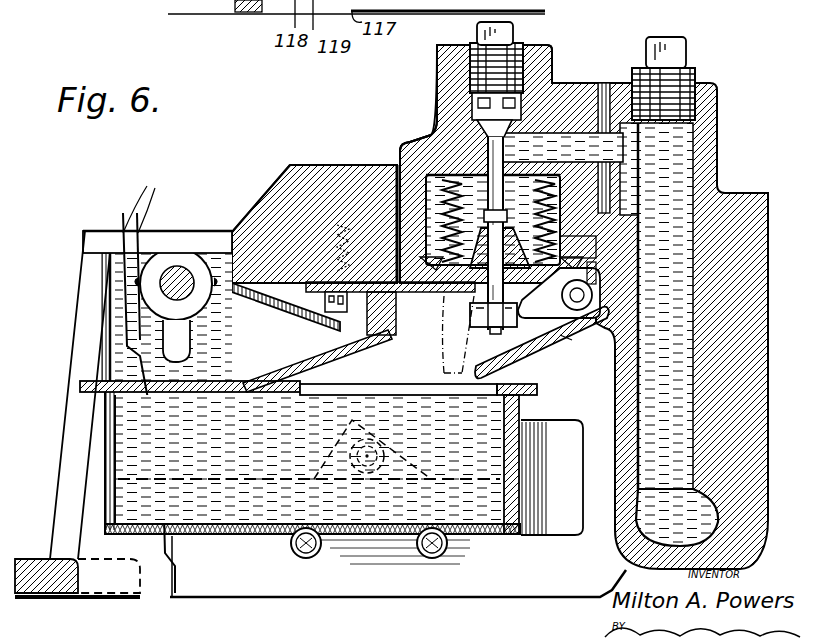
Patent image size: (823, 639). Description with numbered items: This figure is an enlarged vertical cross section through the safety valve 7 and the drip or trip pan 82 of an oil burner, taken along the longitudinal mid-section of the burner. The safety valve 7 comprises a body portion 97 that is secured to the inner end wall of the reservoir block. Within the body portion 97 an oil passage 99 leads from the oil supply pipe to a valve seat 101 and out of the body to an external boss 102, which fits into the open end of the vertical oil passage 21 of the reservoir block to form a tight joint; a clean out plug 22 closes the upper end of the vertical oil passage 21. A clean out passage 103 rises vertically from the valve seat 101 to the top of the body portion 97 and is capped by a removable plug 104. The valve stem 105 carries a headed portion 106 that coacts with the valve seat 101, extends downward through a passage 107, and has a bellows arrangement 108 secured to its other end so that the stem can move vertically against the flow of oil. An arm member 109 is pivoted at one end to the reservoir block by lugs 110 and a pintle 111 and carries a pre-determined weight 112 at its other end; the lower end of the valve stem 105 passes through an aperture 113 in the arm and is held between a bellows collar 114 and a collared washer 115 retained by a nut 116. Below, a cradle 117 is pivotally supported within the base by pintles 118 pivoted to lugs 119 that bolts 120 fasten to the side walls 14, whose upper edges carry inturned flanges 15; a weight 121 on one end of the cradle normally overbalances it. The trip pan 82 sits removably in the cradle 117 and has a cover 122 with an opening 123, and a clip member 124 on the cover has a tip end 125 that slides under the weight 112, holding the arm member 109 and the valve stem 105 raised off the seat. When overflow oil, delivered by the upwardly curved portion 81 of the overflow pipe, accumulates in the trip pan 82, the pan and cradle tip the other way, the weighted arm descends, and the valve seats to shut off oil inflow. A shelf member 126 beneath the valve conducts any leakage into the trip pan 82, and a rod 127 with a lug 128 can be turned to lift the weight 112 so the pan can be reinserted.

The safety valve 7 is at (488, 140).
The side walls 14 is at (95, 490).
The inturned flanges 15 is at (149, 378).
The vertical oil passage 21 is at (691, 152).
The clean out plug 22 is at (675, 50).
The upwardly curved portion 81 is at (546, 375).
The trip pan 82 is at (110, 447).
The body portion 97 is at (440, 54).
The oil passage 99 is at (540, 140).
The valve seat 101 is at (468, 122).
The external boss 102 is at (616, 83).
The clean out passage 103 is at (530, 70).
The removable plug 104 is at (547, 27).
The valve stem 105 is at (420, 141).
The headed portion 106 is at (470, 100).
The passage 107 is at (425, 133).
The bellows arrangement 108 is at (392, 163).
The arm member 109 is at (345, 318).
The lugs 110 is at (548, 270).
The pintle 111 is at (600, 283).
The weight 112 is at (288, 168).
The aperture 113 is at (583, 293).
The bellows collar 114 is at (579, 237).
The collared washer 115 is at (582, 313).
The nut 116 is at (592, 326).
The cradle 117 is at (389, 534).
The pintles 118 is at (345, 455).
The lugs 119 is at (354, 578).
The bolts 120 is at (293, 552).
The weight 121 is at (537, 536).
The cover 122 is at (80, 385).
The opening 123 is at (402, 377).
The clip member 124 is at (305, 372).
The tip end 125 is at (227, 257).
The shelf member 126 is at (565, 340).
The rod 127 is at (168, 278).
The lug 128 is at (152, 298).